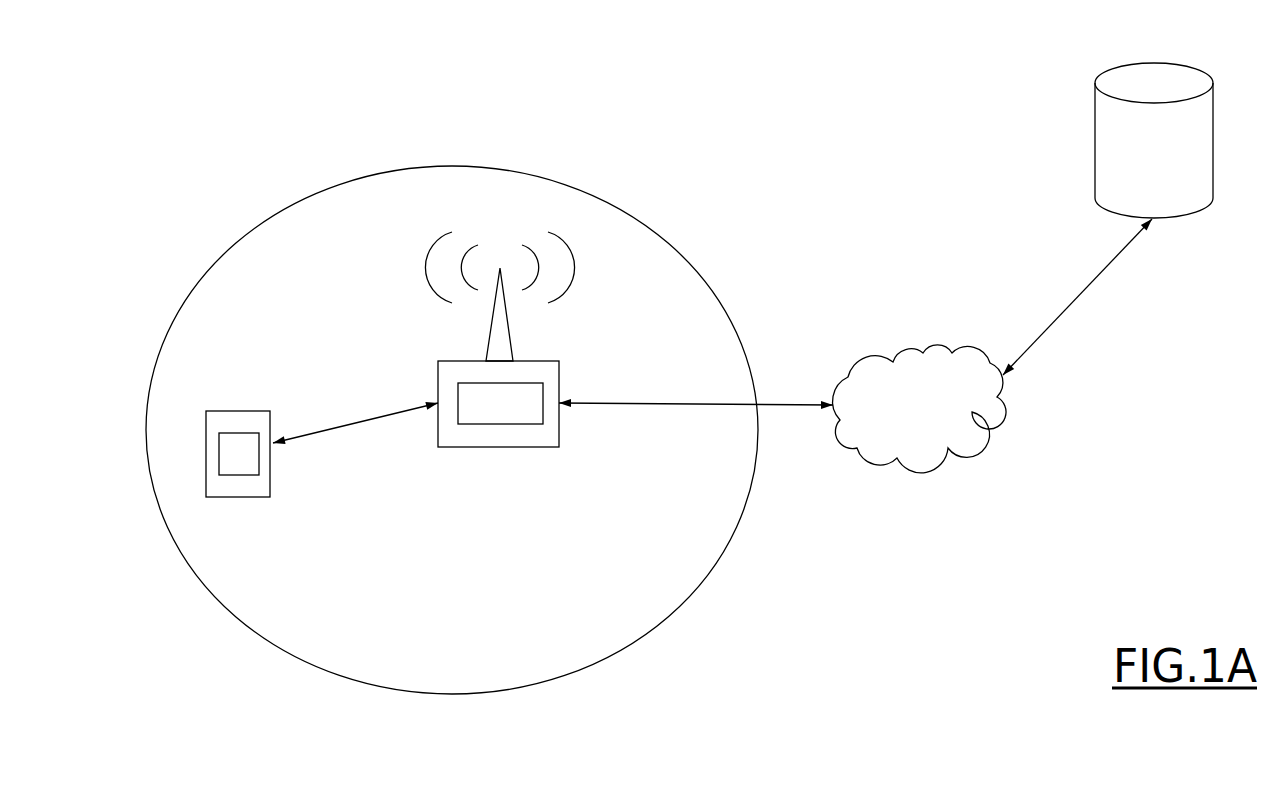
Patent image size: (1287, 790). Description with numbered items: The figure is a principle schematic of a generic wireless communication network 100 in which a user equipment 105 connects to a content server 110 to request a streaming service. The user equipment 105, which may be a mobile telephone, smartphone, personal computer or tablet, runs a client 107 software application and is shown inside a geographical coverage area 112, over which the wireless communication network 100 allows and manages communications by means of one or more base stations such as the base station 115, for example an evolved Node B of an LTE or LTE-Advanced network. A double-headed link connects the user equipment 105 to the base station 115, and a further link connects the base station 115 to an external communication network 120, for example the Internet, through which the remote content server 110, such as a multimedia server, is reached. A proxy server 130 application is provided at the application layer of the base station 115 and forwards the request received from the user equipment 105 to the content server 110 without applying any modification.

The wireless communication network 100 is at (738, 175).
The user equipment 105 is at (262, 411).
The client software application 107 is at (247, 475).
The content server 110 is at (1095, 152).
The geographical coverage area 112 is at (440, 167).
The base station 115 is at (440, 361).
The external communication network 120 is at (937, 343).
The proxy server 130 is at (508, 424).